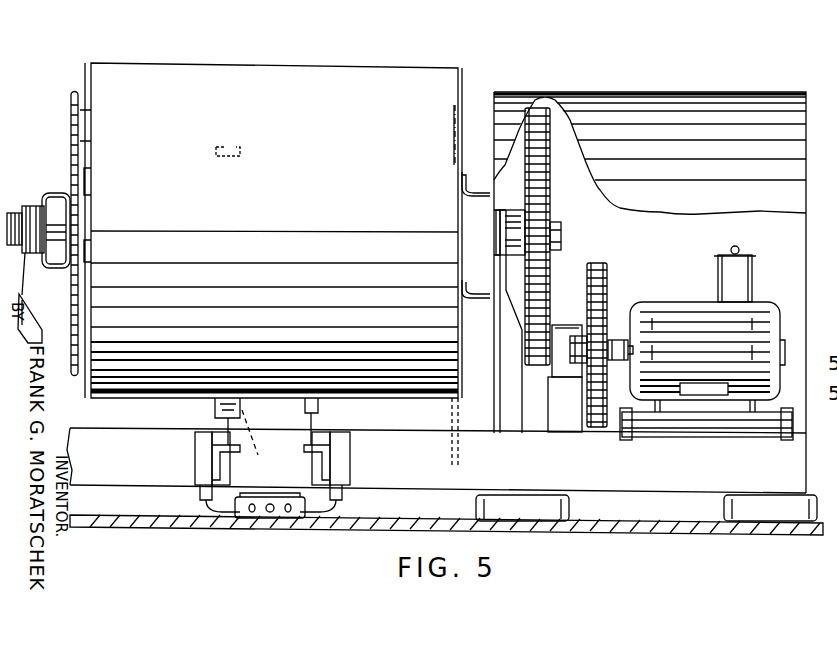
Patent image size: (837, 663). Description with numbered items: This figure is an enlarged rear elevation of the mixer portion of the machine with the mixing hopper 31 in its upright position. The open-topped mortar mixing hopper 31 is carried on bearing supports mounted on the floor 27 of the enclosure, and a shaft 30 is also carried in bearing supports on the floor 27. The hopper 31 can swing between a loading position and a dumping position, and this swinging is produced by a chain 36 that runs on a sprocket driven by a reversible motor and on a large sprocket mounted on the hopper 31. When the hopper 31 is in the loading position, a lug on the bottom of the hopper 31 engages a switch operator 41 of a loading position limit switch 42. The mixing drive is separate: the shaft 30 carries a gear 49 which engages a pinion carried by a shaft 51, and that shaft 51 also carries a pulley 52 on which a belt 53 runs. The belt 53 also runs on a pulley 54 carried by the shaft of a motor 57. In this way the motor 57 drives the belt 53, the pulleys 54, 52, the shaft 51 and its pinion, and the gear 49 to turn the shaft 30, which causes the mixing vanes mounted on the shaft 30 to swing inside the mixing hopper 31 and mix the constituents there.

The floor 27 is at (630, 536).
The shaft 30 is at (562, 240).
The mortar mixing hopper 31 is at (362, 85).
The chain 36 is at (70, 144).
The switch operator 41 is at (266, 434).
The loading position limit switch 42 is at (195, 452).
The gear 49 is at (540, 207).
The shaft 51 is at (515, 355).
The pulley 52 is at (607, 298).
The belt 53 is at (612, 300).
The pulley 54 is at (626, 332).
The motor 57 is at (770, 312).